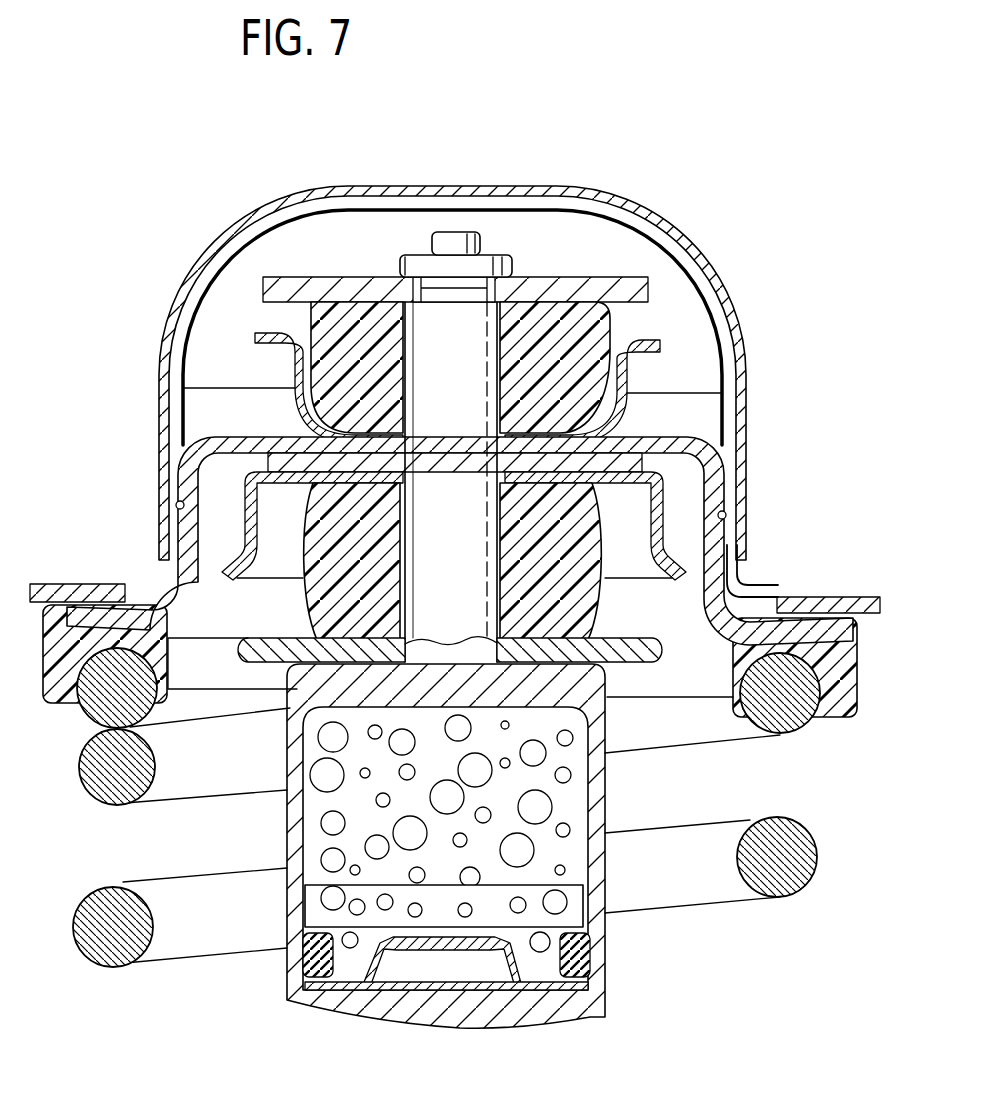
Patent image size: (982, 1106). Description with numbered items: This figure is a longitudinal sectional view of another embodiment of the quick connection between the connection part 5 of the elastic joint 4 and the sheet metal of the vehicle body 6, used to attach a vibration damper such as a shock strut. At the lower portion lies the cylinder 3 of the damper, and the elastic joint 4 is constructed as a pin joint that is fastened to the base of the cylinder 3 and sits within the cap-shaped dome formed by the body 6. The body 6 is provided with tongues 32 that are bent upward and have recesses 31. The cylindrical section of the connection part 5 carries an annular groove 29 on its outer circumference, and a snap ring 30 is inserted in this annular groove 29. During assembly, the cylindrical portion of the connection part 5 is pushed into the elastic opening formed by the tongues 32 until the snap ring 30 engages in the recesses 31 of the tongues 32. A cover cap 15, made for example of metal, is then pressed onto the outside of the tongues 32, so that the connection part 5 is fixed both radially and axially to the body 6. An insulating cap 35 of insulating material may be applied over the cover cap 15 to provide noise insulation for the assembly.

The cylinder 3 is at (600, 1000).
The elastic joint 4 is at (258, 378).
The connection part 5 is at (675, 447).
The vehicle body 6 is at (860, 597).
The cover cap 15 is at (650, 209).
The annular groove 29 is at (180, 478).
The snap ring 30 is at (176, 505).
The recesses 31 is at (726, 515).
The tongues 32 is at (730, 575).
The insulating cap 35 is at (718, 313).